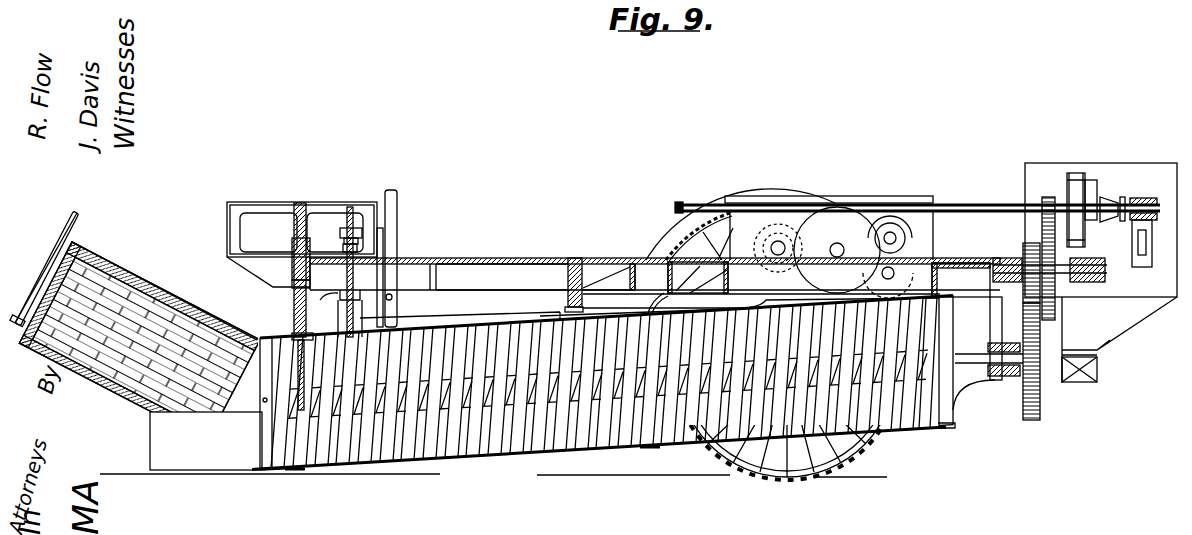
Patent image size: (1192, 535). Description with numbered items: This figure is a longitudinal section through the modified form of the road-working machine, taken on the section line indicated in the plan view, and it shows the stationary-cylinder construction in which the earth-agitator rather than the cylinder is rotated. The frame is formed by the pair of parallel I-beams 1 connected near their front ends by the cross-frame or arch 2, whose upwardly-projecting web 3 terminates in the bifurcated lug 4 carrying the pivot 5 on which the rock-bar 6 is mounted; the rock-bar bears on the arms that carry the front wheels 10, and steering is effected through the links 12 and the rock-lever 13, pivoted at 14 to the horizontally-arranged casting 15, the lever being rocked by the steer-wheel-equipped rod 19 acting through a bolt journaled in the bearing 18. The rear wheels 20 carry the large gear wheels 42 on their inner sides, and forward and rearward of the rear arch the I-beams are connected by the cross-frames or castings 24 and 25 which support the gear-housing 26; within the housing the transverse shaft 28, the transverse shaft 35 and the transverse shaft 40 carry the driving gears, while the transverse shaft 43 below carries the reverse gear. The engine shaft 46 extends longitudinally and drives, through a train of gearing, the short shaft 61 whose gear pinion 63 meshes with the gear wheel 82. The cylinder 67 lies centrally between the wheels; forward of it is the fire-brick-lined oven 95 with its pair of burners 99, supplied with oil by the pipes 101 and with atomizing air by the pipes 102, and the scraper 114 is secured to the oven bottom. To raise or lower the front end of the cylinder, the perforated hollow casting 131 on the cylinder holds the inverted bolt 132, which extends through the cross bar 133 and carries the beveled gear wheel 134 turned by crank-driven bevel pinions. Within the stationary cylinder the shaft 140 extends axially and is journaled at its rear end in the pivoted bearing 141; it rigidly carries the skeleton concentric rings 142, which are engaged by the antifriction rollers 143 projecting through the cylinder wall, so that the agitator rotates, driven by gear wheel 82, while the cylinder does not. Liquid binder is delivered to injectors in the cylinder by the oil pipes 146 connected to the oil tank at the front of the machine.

The I-beams 1 is at (418, 258).
The cross-frame or arch 2 is at (345, 306).
The upwardly-projecting web 3 is at (341, 282).
The bifurcated lug 4 is at (347, 248).
The pivot 5 is at (343, 236).
The rock-bar 6 is at (352, 208).
The front wheels 10 is at (365, 474).
The links 12 is at (570, 322).
The rock-lever 13 is at (566, 298).
The pivot 14 is at (576, 259).
The horizontally-arranged casting 15 is at (516, 259).
The bearing 18 is at (1034, 165).
The steer-wheel-equipped rod 19 is at (1142, 198).
The rear wheels 20 is at (858, 450).
The cross-frame or casting 24 is at (663, 262).
The cross-frame or casting 25 is at (946, 263).
The gear-housing 26 is at (734, 196).
The transverse shaft 28 is at (893, 236).
The transverse shaft 35 is at (840, 250).
The transverse shaft 40 is at (779, 241).
The large gear wheels 42 is at (712, 300).
The transverse shaft 43 is at (882, 273).
The engine shaft 46 is at (680, 203).
The short shaft 61 is at (1106, 270).
The gear pinion 63 is at (1024, 246).
The cylinder 67 is at (578, 452).
The gear wheel 82 is at (1036, 422).
The oven 95 is at (157, 284).
The burners 99 is at (139, 341).
The oil pipes 101 is at (73, 226).
The air pipes 102 is at (53, 257).
The scraper 114 is at (206, 441).
The perforated hollow casting 131 is at (294, 334).
The inverted bolt 132 is at (292, 289).
The cross bar 133 is at (294, 266).
The beveled gear wheel 134 is at (300, 250).
The shaft 140 is at (1040, 348).
The pivoted bearing 141 is at (1003, 378).
The skeleton concentric rings 142 is at (651, 473).
The antifriction rollers 143 is at (252, 202).
The oil pipes 146 is at (386, 236).